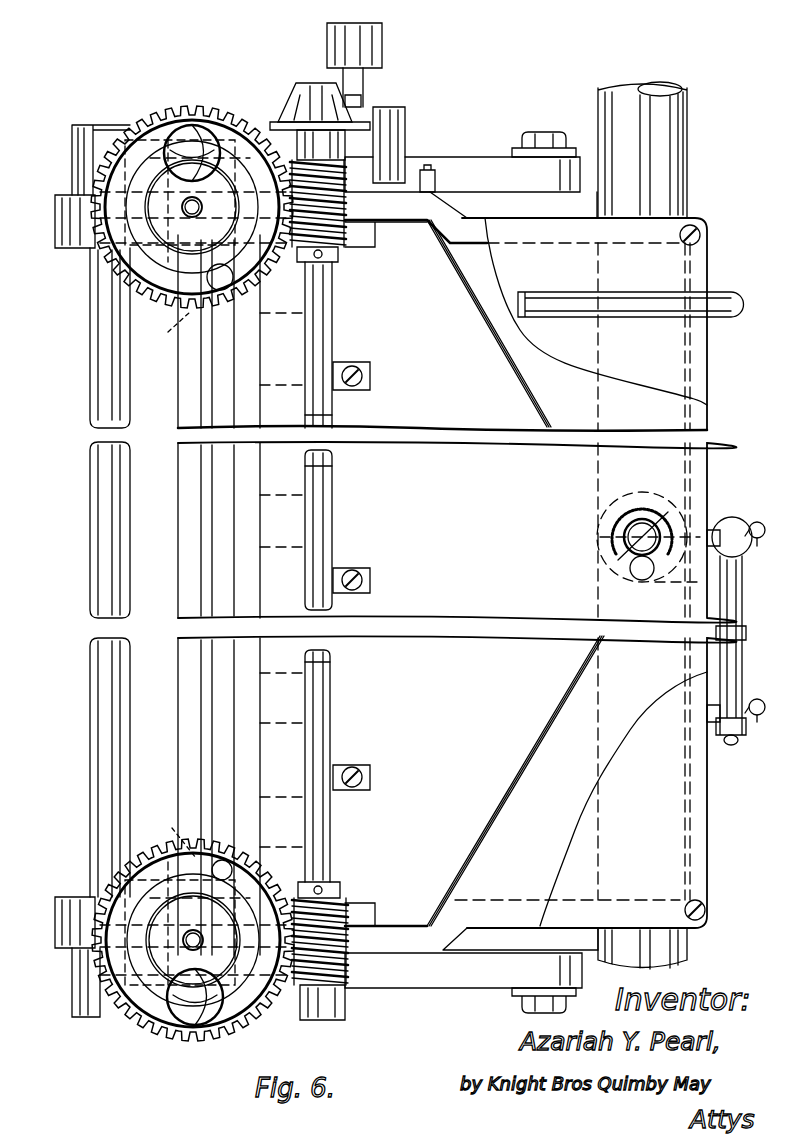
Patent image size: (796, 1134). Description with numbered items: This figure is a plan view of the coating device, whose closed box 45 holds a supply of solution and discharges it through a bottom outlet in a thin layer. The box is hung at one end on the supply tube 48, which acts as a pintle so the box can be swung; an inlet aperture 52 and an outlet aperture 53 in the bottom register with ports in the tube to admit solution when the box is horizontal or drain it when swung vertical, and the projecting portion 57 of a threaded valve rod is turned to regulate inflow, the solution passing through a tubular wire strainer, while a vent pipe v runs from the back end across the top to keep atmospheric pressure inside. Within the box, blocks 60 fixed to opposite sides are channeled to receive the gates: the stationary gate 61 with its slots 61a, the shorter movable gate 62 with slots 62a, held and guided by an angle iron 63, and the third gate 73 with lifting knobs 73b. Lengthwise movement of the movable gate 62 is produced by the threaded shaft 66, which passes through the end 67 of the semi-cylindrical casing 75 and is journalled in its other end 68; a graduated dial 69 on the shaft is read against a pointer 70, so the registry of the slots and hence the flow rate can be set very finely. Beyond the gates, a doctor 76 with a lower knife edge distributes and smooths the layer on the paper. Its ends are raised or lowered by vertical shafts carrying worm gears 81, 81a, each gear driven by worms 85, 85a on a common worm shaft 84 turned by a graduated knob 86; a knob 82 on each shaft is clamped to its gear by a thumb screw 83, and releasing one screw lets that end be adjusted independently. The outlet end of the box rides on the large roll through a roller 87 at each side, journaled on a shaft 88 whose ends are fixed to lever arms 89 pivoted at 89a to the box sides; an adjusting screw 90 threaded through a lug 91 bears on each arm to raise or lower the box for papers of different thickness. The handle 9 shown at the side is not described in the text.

The lever 9 is at (743, 608).
The closed box 45 is at (708, 400).
The supply tube 48 is at (688, 170).
The inlet aperture 52 is at (622, 537).
The outlet aperture 53 is at (630, 570).
The projecting portion of valve rod 57 is at (660, 528).
The blocks 60 is at (376, 240).
The stationary gate 61 is at (288, 341).
The slots of stationary gate 61a is at (290, 520).
The movable gate 62 is at (335, 425).
The slots of movable gate 62a is at (340, 490).
The angle iron 63 is at (371, 376).
The shaft 66 is at (350, 150).
The end of casing 67 is at (437, 178).
The end of casing 68 is at (407, 120).
The knob or dial 69 is at (384, 48).
The pointer 70 is at (366, 88).
The third gate 73 is at (210, 400).
The lifting knobs 73b is at (162, 585).
The semi-cylindrical casing 75 is at (420, 160).
The doctor 76 is at (178, 497).
The worm gear 81 is at (152, 112).
The worm gear 81a is at (195, 1042).
The knob 82 is at (150, 150).
The thumb screw 83 is at (205, 120).
The worm shaft 84 is at (335, 478).
The worm 85 is at (348, 247).
The worm 85a is at (352, 907).
The graduated knob 86 is at (312, 90).
The roller 87 is at (55, 225).
The shaft 88 is at (92, 352).
The lever arm 89 is at (490, 157).
The pivot of lever arm 89a is at (545, 130).
The adjusting screw 90 is at (250, 138).
The lug 91 is at (660, 500).
The vent pipe v is at (736, 300).